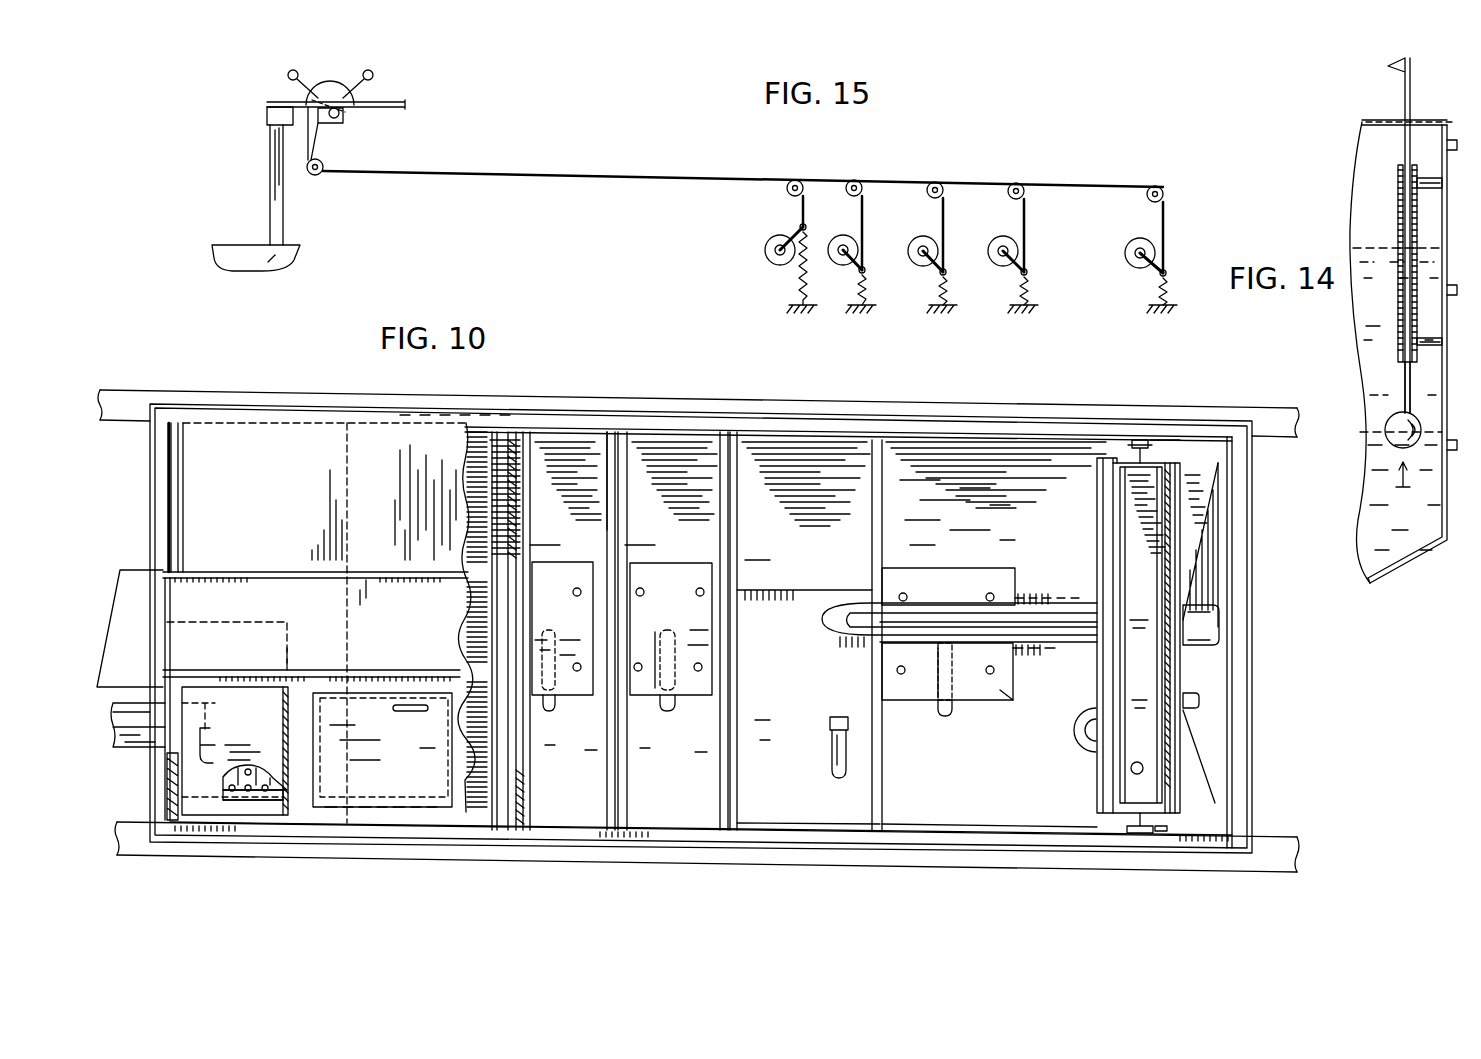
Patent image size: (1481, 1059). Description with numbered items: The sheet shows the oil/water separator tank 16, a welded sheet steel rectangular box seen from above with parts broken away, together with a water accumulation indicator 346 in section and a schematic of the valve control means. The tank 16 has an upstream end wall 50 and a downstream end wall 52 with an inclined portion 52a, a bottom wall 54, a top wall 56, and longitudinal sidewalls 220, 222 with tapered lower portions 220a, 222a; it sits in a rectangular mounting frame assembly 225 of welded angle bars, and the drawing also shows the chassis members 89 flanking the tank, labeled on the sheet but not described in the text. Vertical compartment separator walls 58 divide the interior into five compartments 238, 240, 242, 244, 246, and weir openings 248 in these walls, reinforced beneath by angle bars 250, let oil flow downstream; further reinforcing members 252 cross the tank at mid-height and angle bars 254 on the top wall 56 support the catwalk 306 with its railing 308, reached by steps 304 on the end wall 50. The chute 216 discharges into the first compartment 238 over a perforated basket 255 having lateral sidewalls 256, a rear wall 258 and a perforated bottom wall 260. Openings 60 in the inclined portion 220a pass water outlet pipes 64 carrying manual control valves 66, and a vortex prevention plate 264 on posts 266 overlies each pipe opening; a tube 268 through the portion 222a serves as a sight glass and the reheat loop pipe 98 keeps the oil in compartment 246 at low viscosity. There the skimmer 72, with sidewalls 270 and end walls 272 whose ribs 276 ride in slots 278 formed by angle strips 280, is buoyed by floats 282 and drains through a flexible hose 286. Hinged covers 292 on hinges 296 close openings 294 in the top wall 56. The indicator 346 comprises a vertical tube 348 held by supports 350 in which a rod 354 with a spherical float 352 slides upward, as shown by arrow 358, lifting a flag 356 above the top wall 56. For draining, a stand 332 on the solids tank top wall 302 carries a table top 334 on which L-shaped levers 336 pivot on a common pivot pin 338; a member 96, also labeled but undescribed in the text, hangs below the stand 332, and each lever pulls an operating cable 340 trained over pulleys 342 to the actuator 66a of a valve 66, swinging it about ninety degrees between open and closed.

In FIG. 10, the separator tank 16 is at (626, 393).
In FIG. 10, the upstream end wall 50 is at (170, 467).
In FIG. 10, the downstream end wall 52 is at (1232, 483).
In FIG. 10, the end wall inclined portion 52a is at (1210, 573).
In FIG. 10, the bottom wall 54 is at (790, 607).
In FIG. 14, the top wall 56 is at (1362, 120).
In FIG. 10, the top wall 56 is at (378, 482).
In FIG. 10, the compartment separator walls 58 is at (345, 496).
In FIG. 10, the openings 60 is at (553, 706).
In FIG. 10, the water outlet pipes 64 is at (660, 660).
In FIG. 15, the manual control valves 66 is at (779, 265).
In FIG. 15, the valve actuator 66a is at (768, 249).
In FIG. 10, the skimmer 72 is at (1106, 514).
In FIG. 10, the beam 89 is at (1283, 412).
In FIG. 15, the cup 96 is at (248, 268).
In FIG. 10, the reheat loop pipe 98 is at (963, 615).
In FIG. 10, the chute 216 is at (130, 750).
In FIG. 10, the sidewall 220 is at (775, 438).
In FIG. 10, the inclined sidewall portion 220a is at (1028, 448).
In FIG. 14, the sidewall 222 is at (1446, 510).
In FIG. 10, the sidewall 222 is at (780, 830).
In FIG. 14, the inclined sidewall portion 222a is at (1385, 580).
In FIG. 10, the inclined sidewall portion 222a is at (963, 805).
In FIG. 10, the mounting frame assembly 225 is at (812, 412).
In FIG. 10, the first compartment 238 is at (222, 536).
In FIG. 10, the second compartment 240 is at (452, 792).
In FIG. 10, the third compartment 242 is at (552, 784).
In FIG. 10, the fourth compartment 244 is at (662, 784).
In FIG. 10, the downstream compartment 246 is at (774, 764).
In FIG. 10, the weir openings 248 is at (727, 497).
In FIG. 10, the reinforcement angle bars 250 is at (530, 537).
In FIG. 10, the reinforcing members 252 is at (462, 630).
In FIG. 10, the angle bars 254 is at (180, 527).
In FIG. 10, the perforated basket 255 is at (268, 800).
In FIG. 10, the lateral sidewalls 256 is at (225, 618).
In FIG. 10, the rear wall 258 is at (288, 648).
In FIG. 10, the bottom wall 260 is at (260, 765).
In FIG. 10, the vortex prevention plate 264 is at (534, 612).
In FIG. 10, the vertical posts 266 is at (1000, 690).
In FIG. 10, the tube 268 is at (836, 780).
In FIG. 10, the skimmer sidewalls 270 is at (1162, 563).
In FIG. 10, the skimmer end walls 272 is at (1160, 460).
In FIG. 10, the vertical ribs 276 is at (1170, 832).
In FIG. 10, the vertical slots 278 is at (1138, 440).
In FIG. 10, the angle strips 280 is at (1140, 833).
In FIG. 10, the floats 282 is at (1097, 790).
In FIG. 10, the flexible hose 286 is at (1078, 725).
In FIG. 10, the hinged covers 292 is at (397, 742).
In FIG. 10, the rectangular openings 294 is at (368, 668).
In FIG. 10, the hinges 296 is at (400, 795).
In FIG. 15, the top wall of solids holding tank 302 is at (260, 245).
In FIG. 10, the steps 304 is at (115, 596).
In FIG. 10, the catwalk 306 is at (366, 598).
In FIG. 10, the railing 308 is at (322, 572).
In FIG. 15, the stand 332 is at (267, 115).
In FIG. 15, the table top 334 is at (405, 101).
In FIG. 15, the L-shaped levers 336 is at (368, 70).
In FIG. 15, the pivot pin 338 is at (343, 118).
In FIG. 15, the operating cable 340 is at (511, 175).
In FIG. 15, the pulleys 342 is at (318, 176).
In FIG. 14, the water accumulation indicator 346 is at (1369, 188).
In FIG. 14, the vertical tube 348 is at (1395, 285).
In FIG. 14, the supports 350 is at (1430, 190).
In FIG. 14, the spherical float 352 is at (1421, 430).
In FIG. 14, the rod 354 is at (1412, 413).
In FIG. 14, the flag 356 is at (1395, 66).
In FIG. 14, the arrow 358 is at (1410, 482).